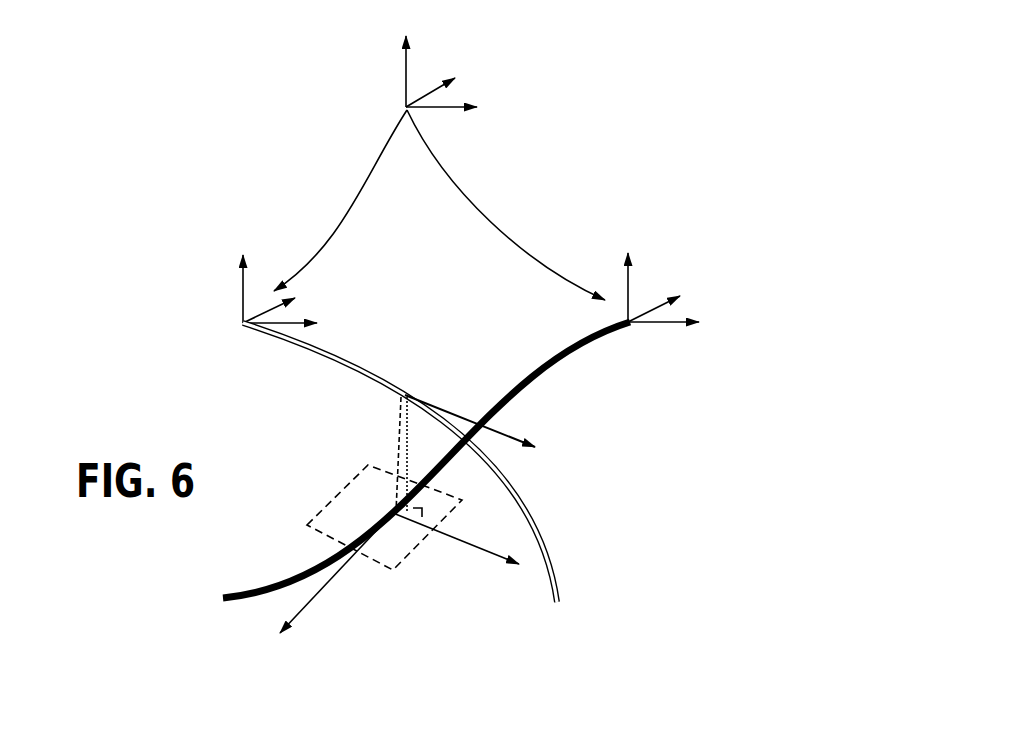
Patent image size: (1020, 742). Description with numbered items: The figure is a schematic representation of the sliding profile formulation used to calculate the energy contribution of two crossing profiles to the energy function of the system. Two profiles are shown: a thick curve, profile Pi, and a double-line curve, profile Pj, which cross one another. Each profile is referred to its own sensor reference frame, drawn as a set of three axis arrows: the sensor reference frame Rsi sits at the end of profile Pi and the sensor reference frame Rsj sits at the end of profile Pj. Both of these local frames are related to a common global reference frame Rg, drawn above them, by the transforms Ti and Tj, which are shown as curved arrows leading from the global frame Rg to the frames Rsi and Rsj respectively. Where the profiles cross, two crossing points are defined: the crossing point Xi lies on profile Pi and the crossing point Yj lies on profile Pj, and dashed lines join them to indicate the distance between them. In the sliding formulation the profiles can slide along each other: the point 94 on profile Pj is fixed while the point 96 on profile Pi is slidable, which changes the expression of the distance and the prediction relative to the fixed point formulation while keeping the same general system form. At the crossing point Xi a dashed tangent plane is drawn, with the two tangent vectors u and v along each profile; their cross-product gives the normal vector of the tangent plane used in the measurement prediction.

The fixed point 94 is at (450, 403).
The slidable point 96 is at (399, 549).
The profile Pi is at (260, 590).
The profile Pj is at (535, 522).
The global reference frame Rg is at (448, 71).
The sensor reference frame of profile Pi Rsi is at (680, 287).
The sensor reference frame of profile Pj Rsj is at (237, 301).
The transform Ti is at (506, 205).
The transform Tj is at (340, 200).
The crossing point Xi is at (452, 575).
The crossing point Yj is at (465, 435).